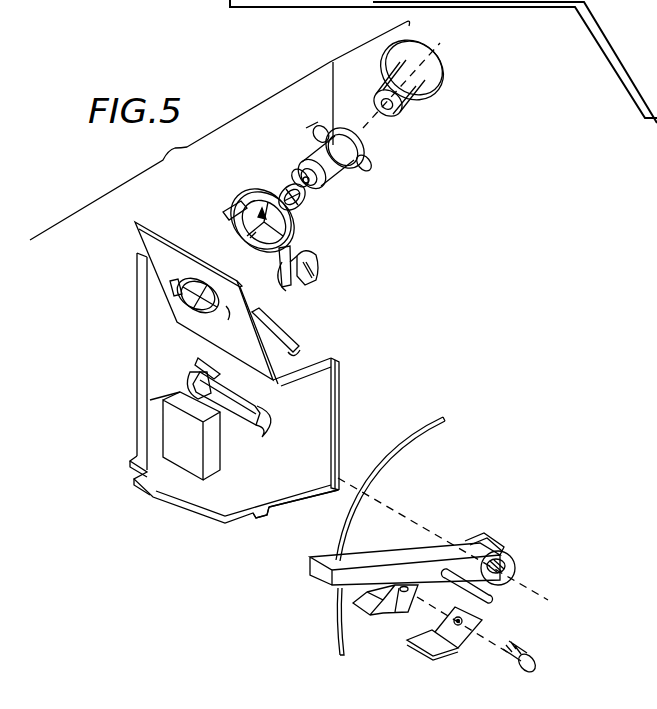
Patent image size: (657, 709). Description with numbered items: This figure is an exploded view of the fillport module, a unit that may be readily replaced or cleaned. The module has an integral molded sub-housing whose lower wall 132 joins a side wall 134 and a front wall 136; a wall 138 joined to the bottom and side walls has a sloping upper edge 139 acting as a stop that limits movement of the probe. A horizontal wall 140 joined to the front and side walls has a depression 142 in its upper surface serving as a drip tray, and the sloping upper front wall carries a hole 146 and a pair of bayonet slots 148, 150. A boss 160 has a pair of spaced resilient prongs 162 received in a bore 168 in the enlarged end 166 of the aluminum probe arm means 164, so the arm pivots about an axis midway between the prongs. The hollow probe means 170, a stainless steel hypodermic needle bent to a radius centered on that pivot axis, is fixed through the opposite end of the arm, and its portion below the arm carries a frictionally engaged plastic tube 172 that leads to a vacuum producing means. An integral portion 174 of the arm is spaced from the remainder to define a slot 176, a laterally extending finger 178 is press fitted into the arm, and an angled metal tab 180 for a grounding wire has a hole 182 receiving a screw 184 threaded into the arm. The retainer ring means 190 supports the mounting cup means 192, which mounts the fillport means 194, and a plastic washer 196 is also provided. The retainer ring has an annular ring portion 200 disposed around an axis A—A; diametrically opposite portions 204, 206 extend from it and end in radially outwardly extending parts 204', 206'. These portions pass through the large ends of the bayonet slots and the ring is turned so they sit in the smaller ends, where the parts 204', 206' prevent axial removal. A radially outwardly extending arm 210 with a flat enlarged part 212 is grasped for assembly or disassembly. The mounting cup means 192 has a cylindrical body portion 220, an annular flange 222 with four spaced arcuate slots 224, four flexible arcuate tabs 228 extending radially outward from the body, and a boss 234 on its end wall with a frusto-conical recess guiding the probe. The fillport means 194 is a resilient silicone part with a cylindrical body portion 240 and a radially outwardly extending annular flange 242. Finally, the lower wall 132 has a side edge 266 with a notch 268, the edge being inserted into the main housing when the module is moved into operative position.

The lower wall 132 is at (236, 440).
The side wall 134 is at (152, 392).
The front wall 136 is at (327, 437).
The wall 138 is at (190, 470).
The sloping upper edge 139 is at (172, 408).
The horizontal wall 140 is at (308, 368).
The depression 142 is at (298, 365).
The hole 146 is at (205, 312).
The bayonet slot 148 is at (172, 284).
The bayonet slot 150 is at (229, 320).
The boss 160 is at (188, 385).
The resilient prongs 162 is at (250, 438).
The probe arm means 164 is at (378, 554).
The enlarged end 166 is at (493, 541).
The bore 168 is at (506, 571).
The hollow probe means 170 is at (428, 437).
The plastic tube 172 is at (338, 606).
The integral portion 174 is at (337, 650).
The slot 176 is at (338, 594).
The laterally extending finger 178 is at (490, 603).
The angled metal tab 180 is at (428, 644).
The hole 182 is at (457, 626).
The screw 184 is at (537, 663).
The retainer ring means 190 is at (343, 257).
The mounting cup means 192 is at (398, 190).
The fillport means 194 is at (468, 74).
The plastic washer 196 is at (330, 213).
The annular ring portion 200 is at (302, 229).
The portion 204 is at (231, 217).
The radially outwardly extending part 204' is at (202, 214).
The portion 206 is at (344, 287).
The radially outwardly extending part 206' is at (293, 295).
The radially outwardly extending arm 210 is at (303, 282).
The flat enlarged part 212 is at (315, 280).
The cylindrical body portion 220 is at (333, 62).
The annular flange 222 is at (350, 127).
The arcuate slots 224 is at (310, 128).
The flexible arcuate tabs 228 is at (316, 137).
The boss 234 is at (296, 174).
The body portion 240 is at (418, 118).
The annular flange 242 is at (402, 53).
The side edge 266 is at (285, 500).
The notch 268 is at (262, 515).
The axis A— A is at (250, 238).